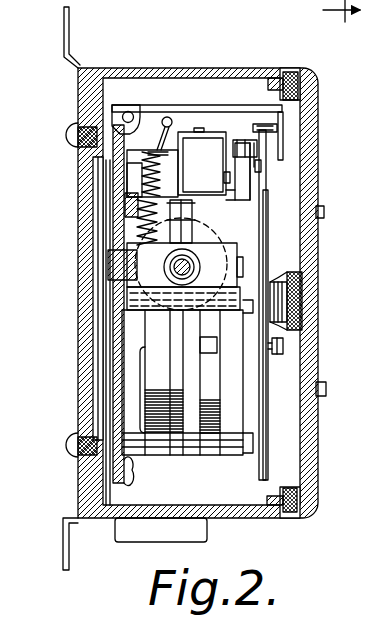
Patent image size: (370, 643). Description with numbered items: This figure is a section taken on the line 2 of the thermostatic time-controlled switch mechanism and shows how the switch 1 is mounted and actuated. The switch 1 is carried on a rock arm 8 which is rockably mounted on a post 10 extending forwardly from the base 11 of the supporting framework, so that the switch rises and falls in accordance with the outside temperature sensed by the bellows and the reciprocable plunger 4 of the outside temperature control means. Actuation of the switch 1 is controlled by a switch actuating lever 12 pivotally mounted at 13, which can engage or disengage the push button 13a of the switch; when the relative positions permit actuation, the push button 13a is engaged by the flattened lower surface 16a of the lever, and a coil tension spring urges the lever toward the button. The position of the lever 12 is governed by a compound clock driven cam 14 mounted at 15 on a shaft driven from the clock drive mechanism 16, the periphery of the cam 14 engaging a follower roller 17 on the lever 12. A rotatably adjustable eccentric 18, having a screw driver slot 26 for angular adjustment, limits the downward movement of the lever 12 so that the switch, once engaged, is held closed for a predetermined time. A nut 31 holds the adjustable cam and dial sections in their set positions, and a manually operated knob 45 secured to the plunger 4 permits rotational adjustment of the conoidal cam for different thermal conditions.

The switch 1 is at (214, 146).
The closed chamber 2 is at (341, 24).
The reciprocable plunger 4 is at (192, 257).
The rock arm 8 is at (182, 181).
The post 10 is at (143, 163).
The base 11 is at (122, 229).
The switch actuating lever 12 is at (195, 112).
The pivot 13 is at (130, 112).
The push button 13a is at (192, 132).
The compound clock driven cam 14 is at (320, 188).
The cam mounting 15 is at (302, 300).
The clock drive mechanism 16 is at (222, 402).
The flattened lower surface 16a is at (170, 125).
The follower roller 17 is at (262, 128).
The adjustable eccentric 18 is at (252, 150).
The screw driver slot 26 is at (266, 166).
The nut 31 is at (284, 345).
The knob 45 is at (296, 197).